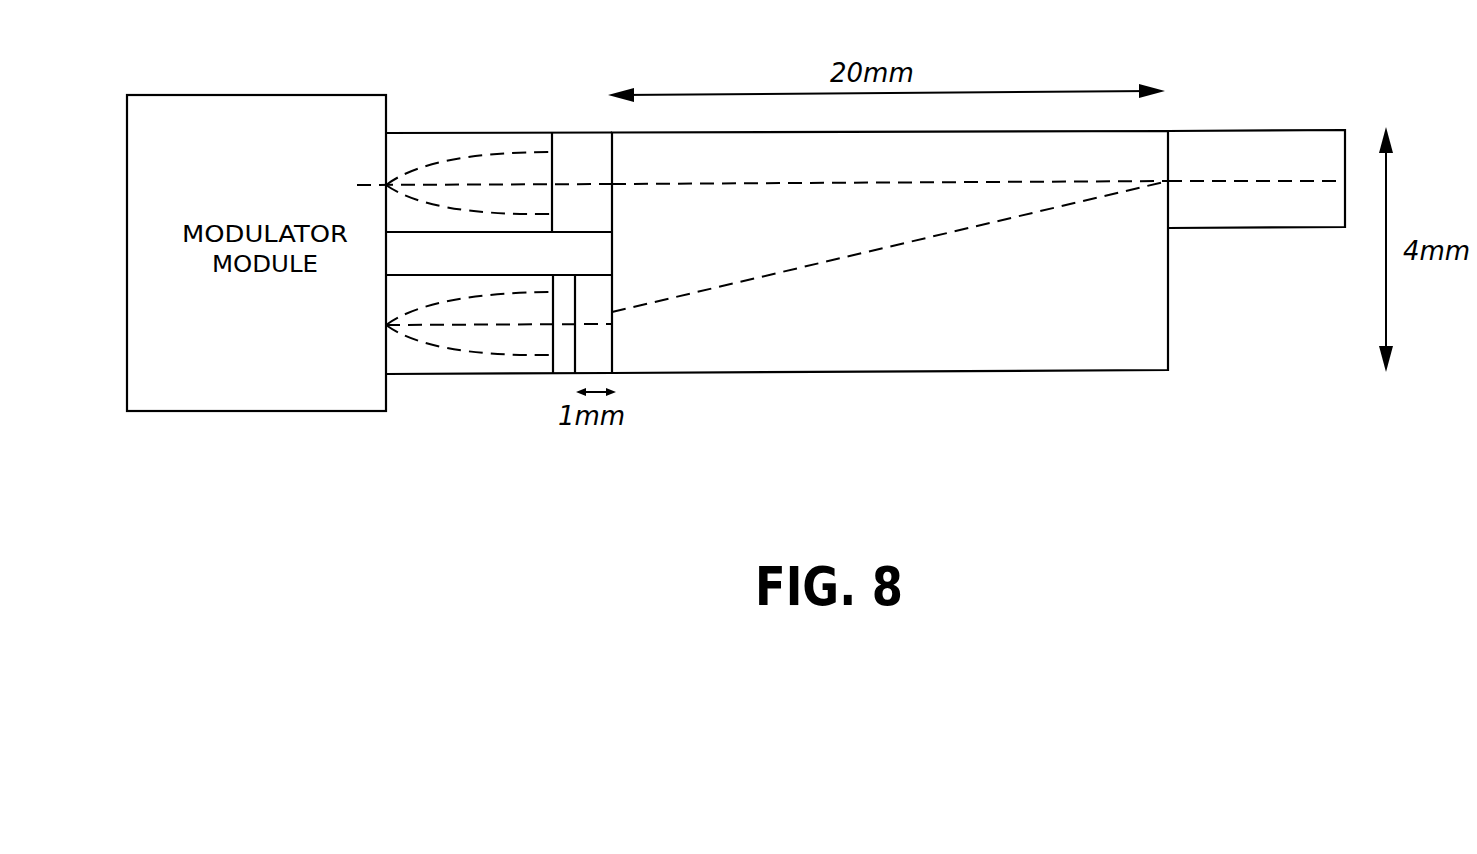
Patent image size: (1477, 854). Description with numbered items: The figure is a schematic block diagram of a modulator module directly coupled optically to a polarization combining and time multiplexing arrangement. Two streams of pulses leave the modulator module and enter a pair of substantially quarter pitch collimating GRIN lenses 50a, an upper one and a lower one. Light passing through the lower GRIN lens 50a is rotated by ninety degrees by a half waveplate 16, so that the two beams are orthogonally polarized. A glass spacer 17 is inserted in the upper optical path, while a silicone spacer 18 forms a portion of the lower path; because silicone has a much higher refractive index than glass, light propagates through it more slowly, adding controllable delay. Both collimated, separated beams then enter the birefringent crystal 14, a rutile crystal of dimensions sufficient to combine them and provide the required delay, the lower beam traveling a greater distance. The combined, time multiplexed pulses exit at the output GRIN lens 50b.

The GRIN lens 50a is at (469, 133).
The GRIN lens 50b is at (1233, 130).
The birefringent crystal 14 is at (893, 372).
The half waveplate 16 is at (547, 374).
The glass spacer 17 is at (567, 133).
The silicone spacer 18 is at (597, 349).